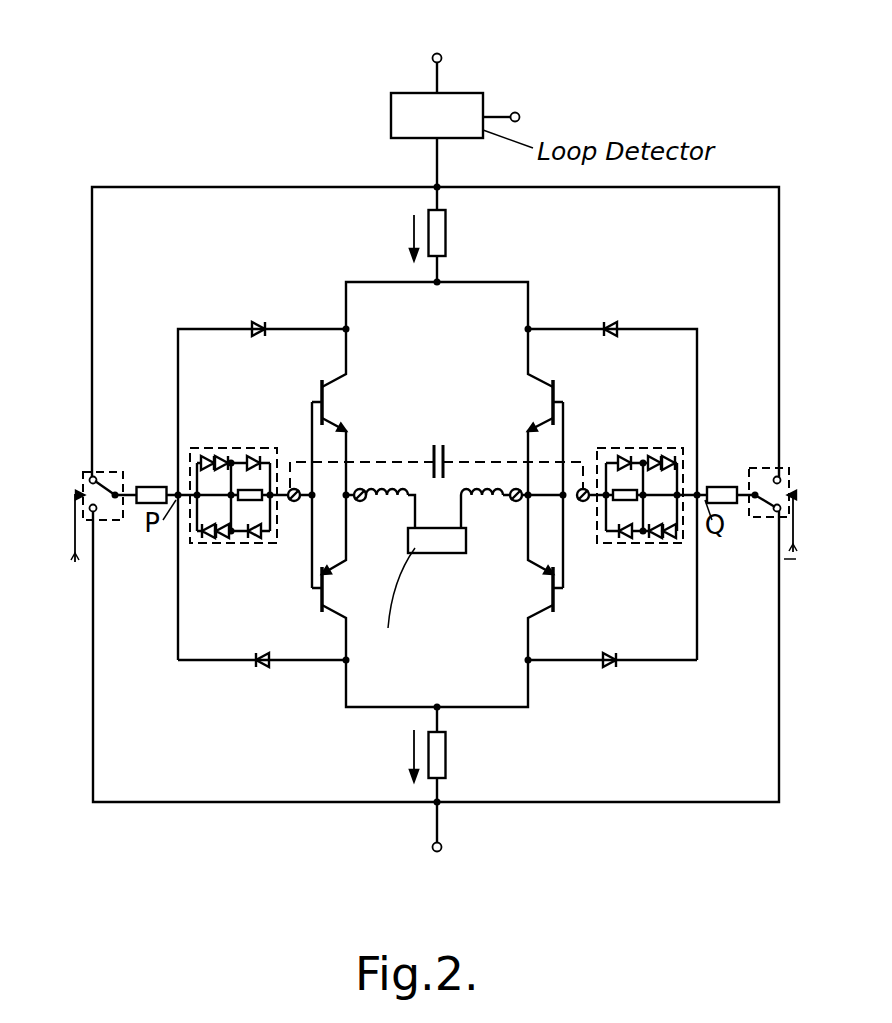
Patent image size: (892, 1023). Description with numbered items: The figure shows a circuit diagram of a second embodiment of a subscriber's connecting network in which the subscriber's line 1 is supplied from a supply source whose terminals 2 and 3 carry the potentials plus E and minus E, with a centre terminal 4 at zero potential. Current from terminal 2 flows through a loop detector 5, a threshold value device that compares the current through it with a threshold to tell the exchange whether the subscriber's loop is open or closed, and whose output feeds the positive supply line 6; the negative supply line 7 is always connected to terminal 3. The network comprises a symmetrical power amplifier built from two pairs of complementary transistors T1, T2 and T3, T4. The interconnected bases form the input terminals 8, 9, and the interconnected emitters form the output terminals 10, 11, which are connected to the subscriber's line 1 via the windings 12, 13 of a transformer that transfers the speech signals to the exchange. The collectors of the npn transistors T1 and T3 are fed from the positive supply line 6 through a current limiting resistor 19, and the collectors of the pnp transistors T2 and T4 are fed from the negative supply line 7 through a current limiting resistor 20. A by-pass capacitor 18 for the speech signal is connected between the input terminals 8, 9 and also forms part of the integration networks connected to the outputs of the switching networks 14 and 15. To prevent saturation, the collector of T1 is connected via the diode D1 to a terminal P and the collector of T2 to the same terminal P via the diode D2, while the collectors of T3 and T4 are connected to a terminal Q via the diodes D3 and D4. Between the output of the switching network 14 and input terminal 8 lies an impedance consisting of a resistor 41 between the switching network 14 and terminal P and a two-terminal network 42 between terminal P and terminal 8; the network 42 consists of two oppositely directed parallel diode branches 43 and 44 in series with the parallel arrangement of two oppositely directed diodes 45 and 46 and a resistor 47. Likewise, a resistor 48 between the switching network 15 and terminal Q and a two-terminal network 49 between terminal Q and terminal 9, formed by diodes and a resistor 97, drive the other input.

The subscriber's line 1 is at (436, 555).
The terminal 2 is at (441, 55).
The terminal 3 is at (441, 851).
The centre terminal 4 is at (516, 112).
The loop detector 5 is at (400, 110).
The positive supply line 6 is at (223, 187).
The negative supply line 7 is at (235, 812).
The input terminal 8 is at (294, 503).
The input terminal 9 is at (583, 503).
The output terminal 10 is at (360, 503).
The output terminal 11 is at (516, 503).
The winding 12 is at (396, 488).
The winding 13 is at (497, 488).
The switching network 14 is at (100, 472).
The switching network 15 is at (770, 470).
The by-pass capacitor 18 is at (445, 448).
The current limiting resistor 19 is at (445, 246).
The current limiting resistor 20 is at (446, 754).
The resistor 41 is at (150, 487).
The two-terminal network 42 is at (240, 497).
The diode branch 43 is at (208, 458).
The diode branch 44 is at (215, 535).
The diode 45 is at (258, 458).
The diode 46 is at (262, 536).
The resistor 47 is at (246, 500).
The resistor 48 is at (720, 487).
The two-terminal network 49 is at (637, 490).
The resistor 97 is at (620, 500).
The diode D1 is at (258, 318).
The diode D2 is at (263, 672).
The diode D3 is at (608, 318).
The diode D4 is at (613, 672).
The transistor T1 is at (332, 412).
The transistor T2 is at (335, 577).
The transistor T3 is at (530, 412).
The transistor T4 is at (532, 577).